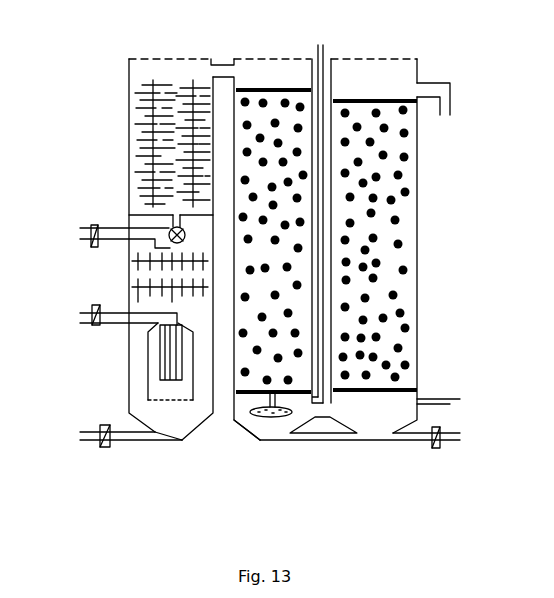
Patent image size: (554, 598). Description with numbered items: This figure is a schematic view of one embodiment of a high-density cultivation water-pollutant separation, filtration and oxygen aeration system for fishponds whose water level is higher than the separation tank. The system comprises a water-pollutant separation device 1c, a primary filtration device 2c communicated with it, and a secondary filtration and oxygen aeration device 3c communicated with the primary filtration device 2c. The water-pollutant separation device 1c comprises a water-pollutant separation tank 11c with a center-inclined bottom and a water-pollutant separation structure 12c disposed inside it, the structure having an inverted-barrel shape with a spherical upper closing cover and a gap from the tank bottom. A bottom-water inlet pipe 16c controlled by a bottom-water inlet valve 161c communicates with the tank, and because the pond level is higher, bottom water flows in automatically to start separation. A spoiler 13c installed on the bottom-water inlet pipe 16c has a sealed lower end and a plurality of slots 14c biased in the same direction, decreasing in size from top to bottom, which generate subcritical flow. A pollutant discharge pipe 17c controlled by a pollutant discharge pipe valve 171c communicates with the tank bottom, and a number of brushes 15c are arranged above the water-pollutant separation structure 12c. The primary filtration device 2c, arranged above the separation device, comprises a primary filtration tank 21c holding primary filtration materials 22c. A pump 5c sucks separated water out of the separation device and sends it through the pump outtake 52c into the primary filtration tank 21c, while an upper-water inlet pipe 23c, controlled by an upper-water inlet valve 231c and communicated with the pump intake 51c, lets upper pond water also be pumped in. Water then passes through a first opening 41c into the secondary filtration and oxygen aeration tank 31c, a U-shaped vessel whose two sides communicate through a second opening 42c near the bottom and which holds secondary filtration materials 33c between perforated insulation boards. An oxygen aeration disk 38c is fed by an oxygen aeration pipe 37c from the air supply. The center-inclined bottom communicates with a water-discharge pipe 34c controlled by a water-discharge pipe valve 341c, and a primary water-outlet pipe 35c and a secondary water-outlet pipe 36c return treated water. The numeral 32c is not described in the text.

The water-pollutant separation device 1c is at (165, 415).
The primary filtration device 2c is at (125, 132).
The primary filtration tank 21c is at (128, 102).
The primary filtration materials 22c is at (150, 148).
The first opening 41c is at (228, 75).
The secondary filtration and oxygen aeration device 3c is at (357, 65).
The oxygen aeration pipe 37c is at (322, 53).
The filter retaining plate 32c is at (397, 387).
The primary water-outlet pipe 35c is at (450, 112).
The secondary filtration and oxygen aeration tank 31c is at (422, 235).
The secondary filtration materials 33c is at (373, 227).
The secondary water-outlet pipe 36c is at (443, 399).
The water-discharge pipe 34c is at (378, 469).
The water-discharge pipe valve 341c is at (432, 448).
The second opening 42c is at (325, 410).
The oxygen aeration disk 38c is at (273, 417).
The water-pollutant separation tank 11c is at (203, 423).
The pollutant discharge pipe 17c is at (145, 438).
The slots 14c is at (117, 460).
The pollutant discharge pipe valve 171c is at (100, 447).
The spoiler 13c is at (152, 395).
The water-pollutant separation structure 12c is at (120, 371).
The bottom-water inlet pipe 16c is at (102, 334).
The bottom-water inlet valve 161c is at (92, 315).
The brushes 15c is at (140, 278).
The upper-water inlet pipe 23c is at (100, 247).
The upper-water inlet valve 231c is at (91, 240).
The pump intake 51c is at (130, 229).
The pump 5c is at (169, 232).
The pump outtake 52c is at (173, 222).